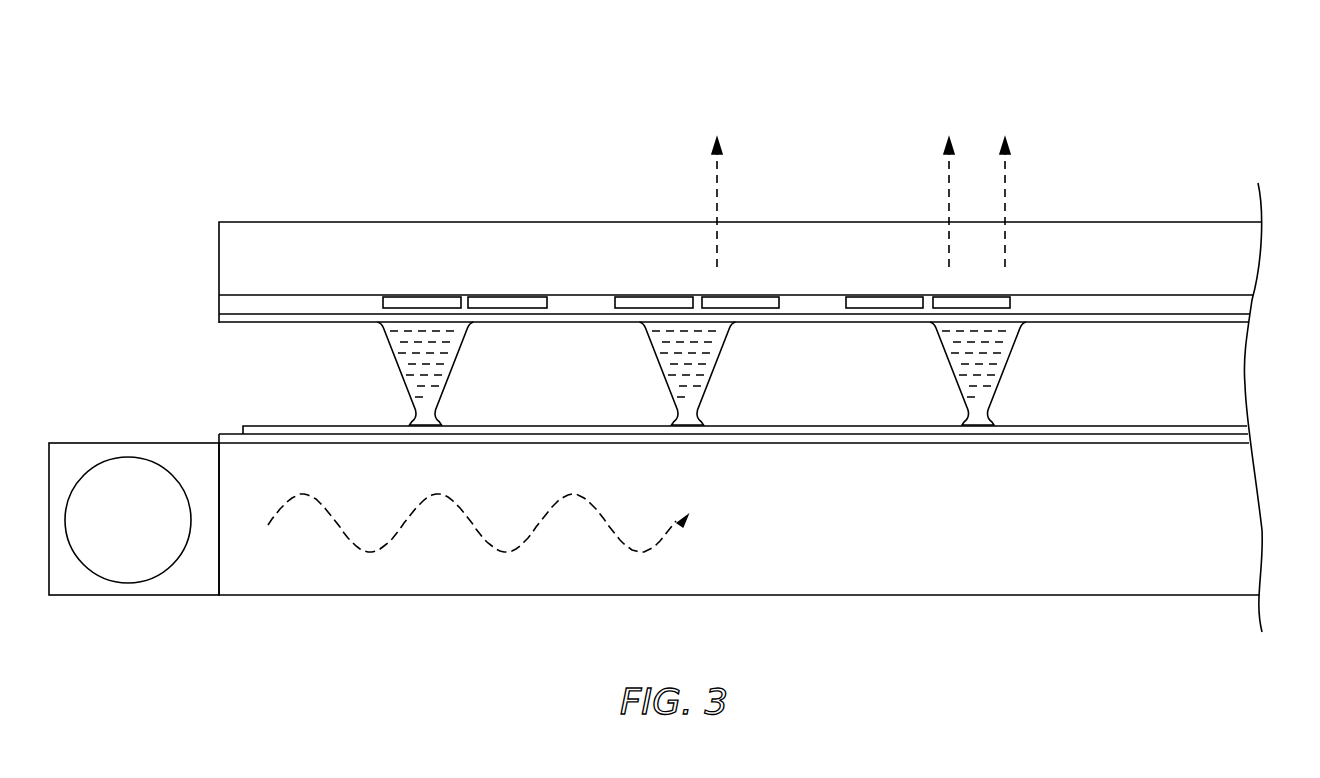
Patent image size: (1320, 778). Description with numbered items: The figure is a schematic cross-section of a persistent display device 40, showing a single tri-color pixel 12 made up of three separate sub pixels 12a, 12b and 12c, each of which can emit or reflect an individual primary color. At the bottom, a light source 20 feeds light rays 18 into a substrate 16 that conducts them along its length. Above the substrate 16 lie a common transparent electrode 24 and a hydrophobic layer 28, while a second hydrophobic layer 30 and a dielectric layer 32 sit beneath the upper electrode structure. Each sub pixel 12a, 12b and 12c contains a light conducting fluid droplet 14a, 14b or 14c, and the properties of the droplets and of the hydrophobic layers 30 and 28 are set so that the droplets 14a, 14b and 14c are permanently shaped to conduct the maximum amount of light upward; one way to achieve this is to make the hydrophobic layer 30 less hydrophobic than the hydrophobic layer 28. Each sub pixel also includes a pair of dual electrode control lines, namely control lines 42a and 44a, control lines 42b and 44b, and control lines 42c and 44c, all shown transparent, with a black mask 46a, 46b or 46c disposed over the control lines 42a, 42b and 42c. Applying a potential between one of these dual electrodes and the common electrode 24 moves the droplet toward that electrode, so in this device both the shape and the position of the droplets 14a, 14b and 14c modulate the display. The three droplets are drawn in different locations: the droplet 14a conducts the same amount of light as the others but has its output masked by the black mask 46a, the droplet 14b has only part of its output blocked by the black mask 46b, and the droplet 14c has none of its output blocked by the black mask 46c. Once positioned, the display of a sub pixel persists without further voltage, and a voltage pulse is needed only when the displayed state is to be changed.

The persistent display device 40 is at (671, 97).
The tri-color pixel 12 is at (862, 150).
The sub pixel 12a is at (496, 205).
The sub pixel 12b is at (749, 205).
The sub pixel 12c is at (1029, 205).
The light conducting fluid droplet 14a is at (418, 367).
The light conducting fluid droplet 14b is at (680, 376).
The light conducting fluid droplet 14c is at (970, 367).
The substrate 16 is at (1100, 545).
The light rays 18 is at (642, 553).
The light source 20 is at (188, 578).
The common transparent electrode 24 is at (1213, 440).
The hydrophobic layer 28 is at (1217, 428).
The hydrophobic layer 30 is at (1217, 320).
The dielectric layer 32 is at (1227, 302).
The dual electrode control line 42a is at (400, 308).
The dual electrode control line 42b is at (630, 308).
The dual electrode control line 42c is at (882, 309).
The dual electrode control line 44a is at (505, 308).
The dual electrode control line 44b is at (755, 308).
The dual electrode control line 44c is at (1008, 304).
The black mask 46a is at (425, 297).
The black mask 46b is at (664, 297).
The black mask 46c is at (905, 297).